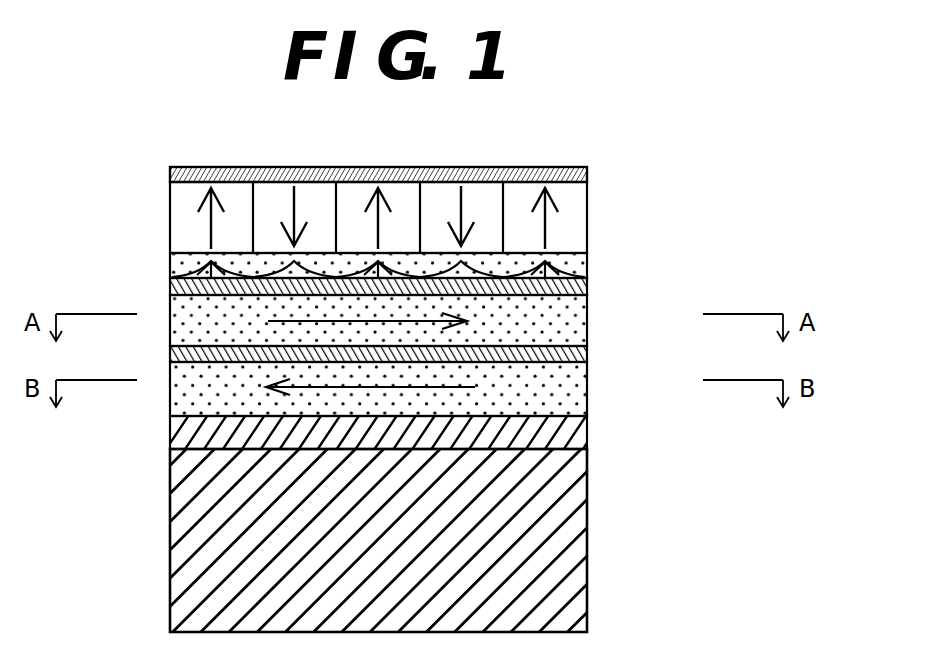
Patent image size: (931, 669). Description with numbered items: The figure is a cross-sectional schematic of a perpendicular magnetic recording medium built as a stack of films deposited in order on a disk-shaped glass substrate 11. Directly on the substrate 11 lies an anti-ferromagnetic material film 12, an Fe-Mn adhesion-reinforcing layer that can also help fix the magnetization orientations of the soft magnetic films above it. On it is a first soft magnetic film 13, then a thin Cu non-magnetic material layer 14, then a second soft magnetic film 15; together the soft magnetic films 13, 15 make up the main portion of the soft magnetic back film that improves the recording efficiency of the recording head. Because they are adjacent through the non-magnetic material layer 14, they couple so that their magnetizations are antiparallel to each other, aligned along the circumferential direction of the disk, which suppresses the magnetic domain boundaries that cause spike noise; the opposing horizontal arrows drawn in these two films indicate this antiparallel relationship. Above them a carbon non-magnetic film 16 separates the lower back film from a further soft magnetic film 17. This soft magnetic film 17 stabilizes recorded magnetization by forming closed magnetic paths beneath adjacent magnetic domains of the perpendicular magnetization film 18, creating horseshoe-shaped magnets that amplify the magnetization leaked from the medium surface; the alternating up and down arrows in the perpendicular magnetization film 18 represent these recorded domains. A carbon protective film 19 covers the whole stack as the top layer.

The substrate 11 is at (590, 516).
The anti-ferromagnetic material film 12 is at (588, 424).
The soft magnetic film 13 is at (580, 385).
The non-magnetic material layer 14 is at (586, 354).
The soft magnetic film 15 is at (580, 318).
The non-magnetic film 16 is at (588, 289).
The soft magnetic film 17 is at (588, 263).
The perpendicular magnetization film 18 is at (580, 206).
The protective film 19 is at (588, 174).